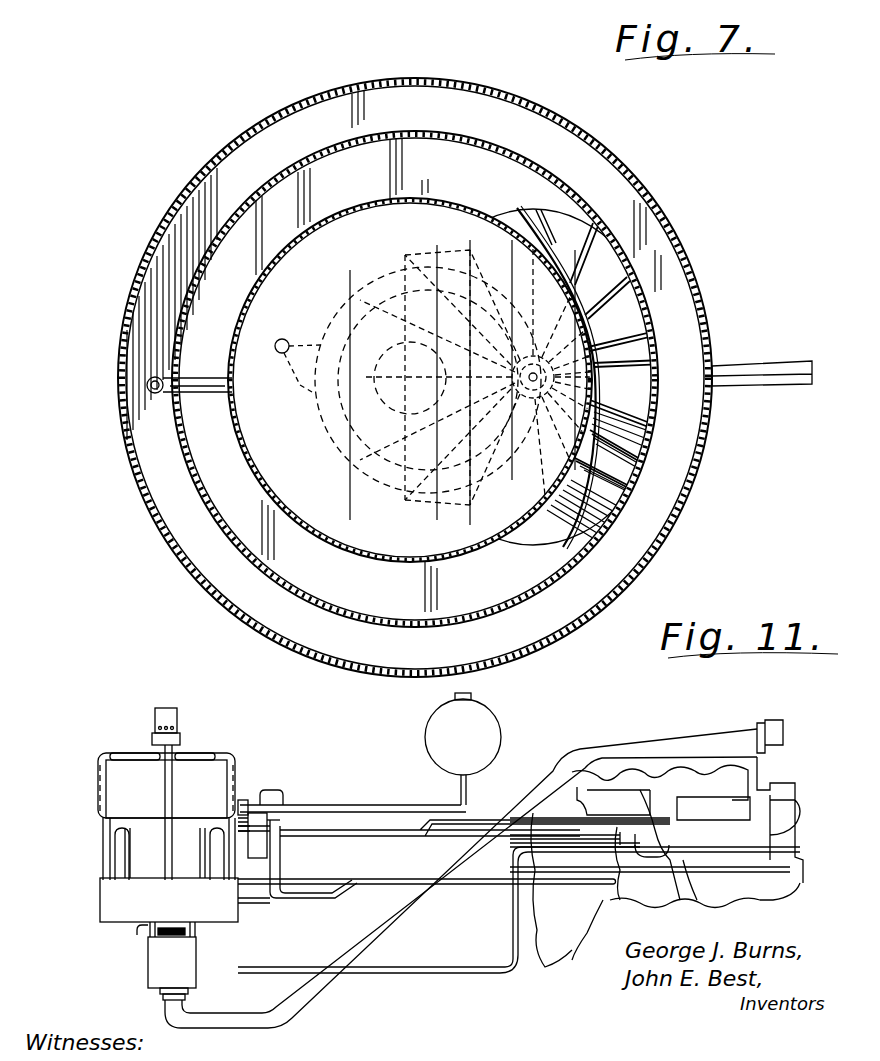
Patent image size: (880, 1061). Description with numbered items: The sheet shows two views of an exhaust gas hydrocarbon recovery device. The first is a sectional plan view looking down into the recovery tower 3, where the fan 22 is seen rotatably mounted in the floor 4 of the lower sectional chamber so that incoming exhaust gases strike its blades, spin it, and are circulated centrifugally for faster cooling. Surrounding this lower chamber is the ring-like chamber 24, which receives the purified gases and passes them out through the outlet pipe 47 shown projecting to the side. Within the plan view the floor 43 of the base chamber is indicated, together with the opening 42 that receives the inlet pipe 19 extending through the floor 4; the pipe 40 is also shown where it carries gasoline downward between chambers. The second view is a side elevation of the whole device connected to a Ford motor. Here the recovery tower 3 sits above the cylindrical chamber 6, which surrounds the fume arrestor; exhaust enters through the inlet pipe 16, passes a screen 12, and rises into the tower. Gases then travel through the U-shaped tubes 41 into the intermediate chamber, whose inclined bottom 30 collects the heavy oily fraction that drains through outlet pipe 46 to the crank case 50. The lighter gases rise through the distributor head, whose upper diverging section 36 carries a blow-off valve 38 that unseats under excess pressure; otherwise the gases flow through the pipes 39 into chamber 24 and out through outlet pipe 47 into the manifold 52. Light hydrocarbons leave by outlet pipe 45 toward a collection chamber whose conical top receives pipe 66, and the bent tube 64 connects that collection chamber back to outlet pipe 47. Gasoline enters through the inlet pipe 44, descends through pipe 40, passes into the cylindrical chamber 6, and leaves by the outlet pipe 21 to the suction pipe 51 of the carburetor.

In FIG. 7, the floor 4 is at (206, 452).
In FIG. 7, the chamber 24 is at (182, 507).
In FIG. 7, the pipe 40 is at (152, 397).
In FIG. 7, the outlet pipe 47 is at (770, 380).
In FIG. 11, the outlet pipe 47 is at (307, 895).
In FIG. 7, the fan 22 is at (572, 525).
In FIG. 7, the floor 43 is at (428, 399).
In FIG. 7, the opening 42 is at (287, 340).
In FIG. 7, the inlet pipe 19 is at (290, 398).
In FIG. 11, the blow-off valve 38 is at (178, 735).
In FIG. 11, the upper diverging section 36 is at (195, 752).
In FIG. 11, the pipes 39 is at (172, 810).
In FIG. 11, the U-shaped tubes 41 is at (178, 863).
In FIG. 11, the recovery tower 3 is at (108, 897).
In FIG. 11, the cylindrical chamber 6 is at (158, 960).
In FIG. 11, the screen 12 is at (160, 998).
In FIG. 11, the inlet pipe 16 is at (227, 1010).
In FIG. 11, the outlet pipe 21 is at (420, 968).
In FIG. 11, the inlet pipe 44 is at (350, 800).
In FIG. 11, the inclined bottom 30 is at (236, 852).
In FIG. 11, the outlet pipe 45 is at (242, 820).
In FIG. 11, the pipe 66 is at (280, 793).
In FIG. 11, the bent tube 64 is at (283, 870).
In FIG. 11, the outlet pipe 46 is at (252, 890).
In FIG. 11, the crank case 50 is at (622, 900).
In FIG. 11, the suction pipe 51 is at (668, 900).
In FIG. 11, the manifold 52 is at (713, 898).